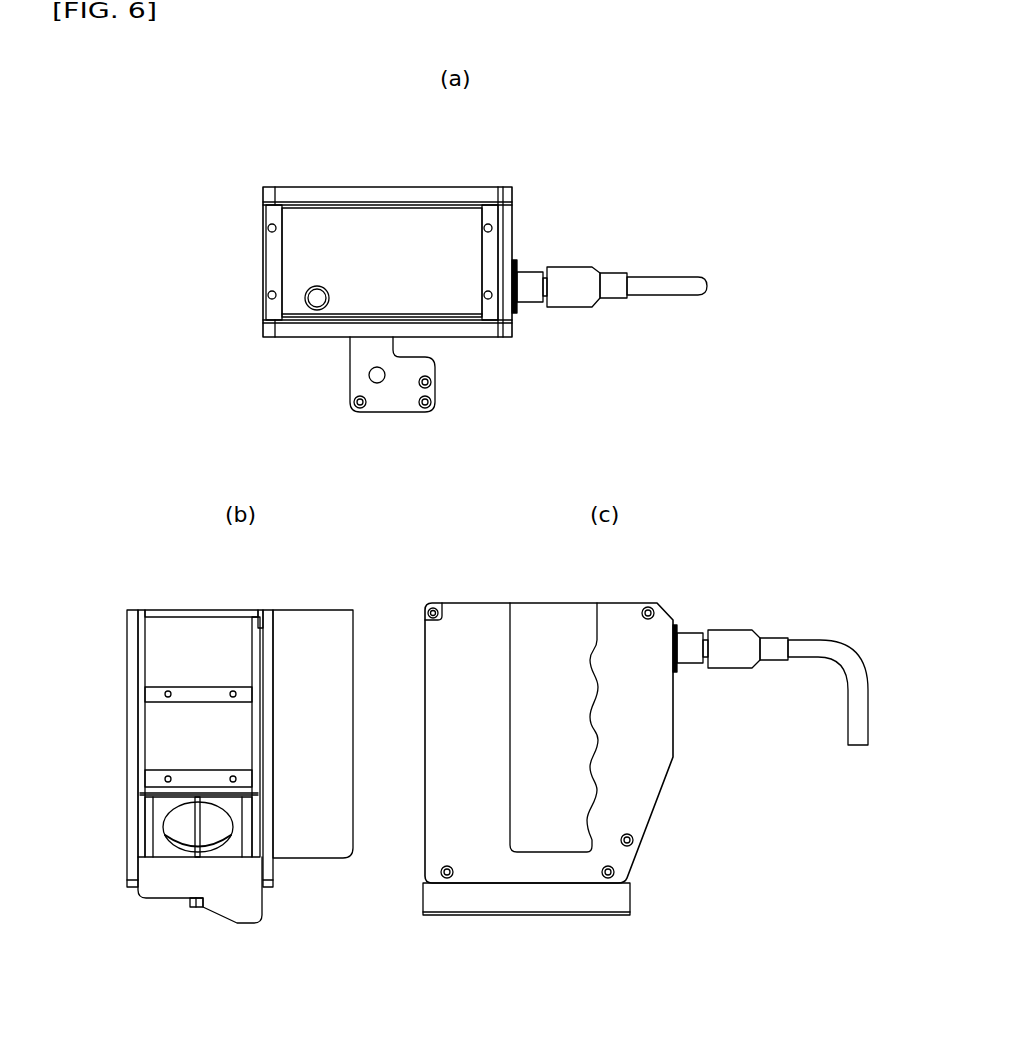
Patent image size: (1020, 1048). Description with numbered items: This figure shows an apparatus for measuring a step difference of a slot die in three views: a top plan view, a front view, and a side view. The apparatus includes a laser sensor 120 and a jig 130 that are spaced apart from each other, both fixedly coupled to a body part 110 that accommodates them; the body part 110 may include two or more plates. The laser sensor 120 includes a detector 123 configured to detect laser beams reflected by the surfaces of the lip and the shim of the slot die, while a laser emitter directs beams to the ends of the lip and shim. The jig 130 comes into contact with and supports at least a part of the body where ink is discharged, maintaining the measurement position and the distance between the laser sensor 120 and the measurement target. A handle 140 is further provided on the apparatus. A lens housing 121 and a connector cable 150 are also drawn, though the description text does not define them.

The body part 110 is at (361, 192).
The laser sensor 120 is at (165, 735).
The lens housing 121 is at (193, 837).
The detector 123 is at (178, 823).
The jig 130 is at (250, 900).
The handle 140 is at (355, 380).
The connector cable 150 is at (655, 742).